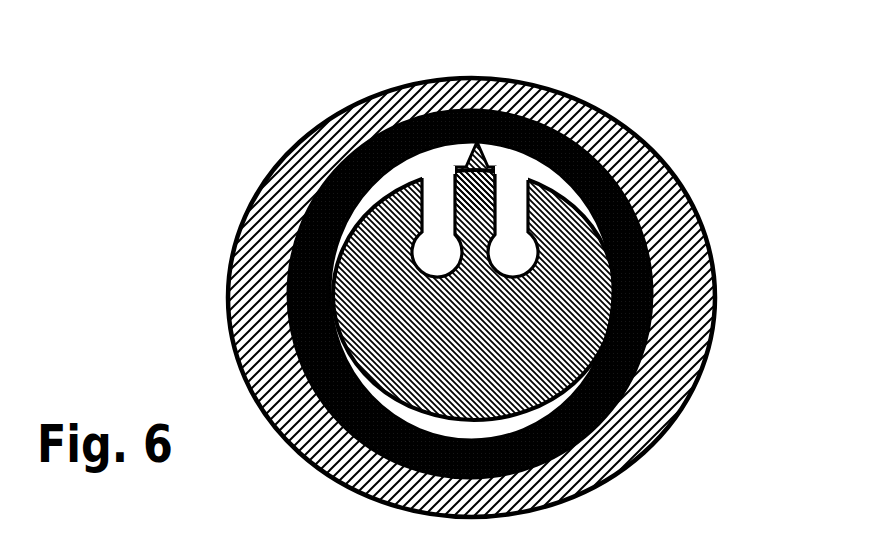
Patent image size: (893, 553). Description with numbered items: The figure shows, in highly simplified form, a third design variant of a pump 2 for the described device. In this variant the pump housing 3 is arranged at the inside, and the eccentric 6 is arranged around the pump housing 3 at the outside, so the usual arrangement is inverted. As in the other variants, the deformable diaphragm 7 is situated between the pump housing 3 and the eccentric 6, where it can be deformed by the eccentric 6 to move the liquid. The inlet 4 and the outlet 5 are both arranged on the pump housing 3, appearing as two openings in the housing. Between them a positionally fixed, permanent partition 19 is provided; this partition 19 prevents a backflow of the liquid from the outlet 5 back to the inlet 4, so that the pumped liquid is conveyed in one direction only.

The pump 2 is at (489, 267).
The pump housing 3 is at (500, 218).
The inlet 4 is at (438, 175).
The outlet 5 is at (513, 190).
The eccentric 6 is at (668, 160).
The deformable diaphragm 7 is at (653, 229).
The partition 19 is at (469, 137).